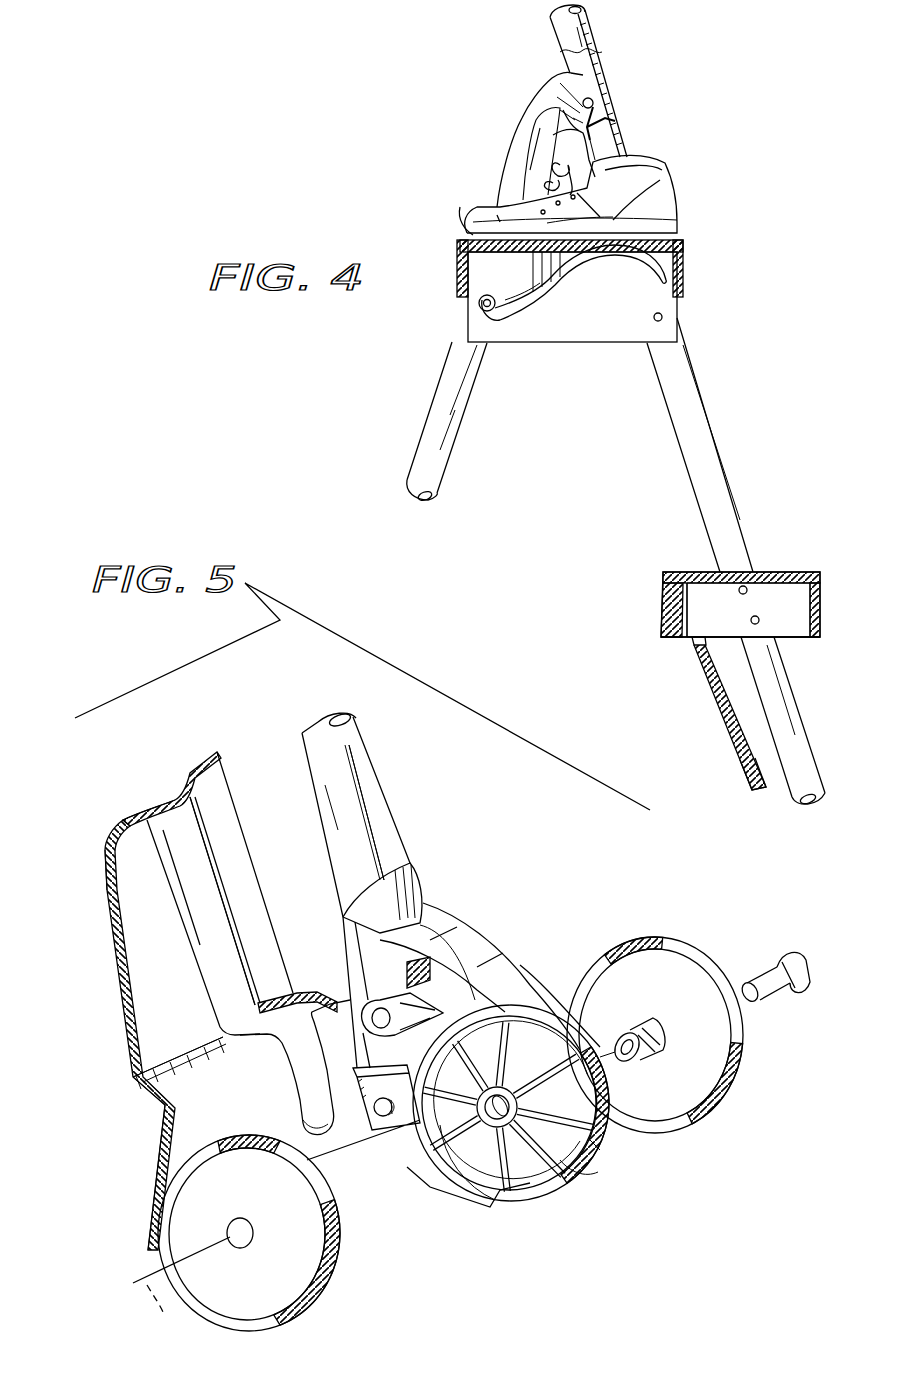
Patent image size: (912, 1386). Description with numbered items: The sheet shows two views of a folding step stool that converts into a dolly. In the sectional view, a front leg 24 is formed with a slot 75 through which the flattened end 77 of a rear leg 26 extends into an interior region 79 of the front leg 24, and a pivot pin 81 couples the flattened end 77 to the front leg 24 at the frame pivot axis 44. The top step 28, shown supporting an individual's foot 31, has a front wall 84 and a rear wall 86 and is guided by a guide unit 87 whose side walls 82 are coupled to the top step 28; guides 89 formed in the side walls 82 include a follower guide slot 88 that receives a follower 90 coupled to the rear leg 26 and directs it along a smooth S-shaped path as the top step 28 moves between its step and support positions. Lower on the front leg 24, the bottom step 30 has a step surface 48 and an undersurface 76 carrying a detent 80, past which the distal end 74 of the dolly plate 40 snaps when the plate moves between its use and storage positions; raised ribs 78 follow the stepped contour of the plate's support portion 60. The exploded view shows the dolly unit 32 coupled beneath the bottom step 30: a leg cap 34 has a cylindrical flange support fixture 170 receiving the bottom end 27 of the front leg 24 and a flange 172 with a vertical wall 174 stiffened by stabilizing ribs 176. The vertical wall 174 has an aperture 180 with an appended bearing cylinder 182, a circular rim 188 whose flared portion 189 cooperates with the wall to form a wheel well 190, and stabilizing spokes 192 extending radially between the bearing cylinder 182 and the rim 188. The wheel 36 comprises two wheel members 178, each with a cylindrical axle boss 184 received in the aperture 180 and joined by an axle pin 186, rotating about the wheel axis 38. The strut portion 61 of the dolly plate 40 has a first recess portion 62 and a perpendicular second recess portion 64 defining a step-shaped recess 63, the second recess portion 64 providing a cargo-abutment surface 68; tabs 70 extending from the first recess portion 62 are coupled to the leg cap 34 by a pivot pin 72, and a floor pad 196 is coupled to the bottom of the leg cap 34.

In FIG. 4, the front legs 24 is at (718, 428).
In FIG. 5, the front legs 24 is at (395, 792).
In FIG. 4, the rear legs 26 is at (413, 430).
In FIG. 5, the bottom end 27 is at (385, 842).
In FIG. 4, the top step 28 is at (693, 241).
In FIG. 4, the bottom step 30 is at (833, 637).
In FIG. 4, the individual's foot 31 is at (633, 187).
In FIG. 5, the dolly unit 32 is at (113, 997).
In FIG. 5, the leg caps 34 is at (463, 897).
In FIG. 5, the wheels 36 is at (677, 940).
In FIG. 5, the wheel axis 38 is at (181, 1290).
In FIG. 4, the dolly plate 40 is at (693, 688).
In FIG. 5, the dolly plate 40 is at (130, 887).
In FIG. 4, the frame pivot axis 44 is at (607, 120).
In FIG. 4, the step surface 48 is at (777, 573).
In FIG. 4, the support portion 60 is at (723, 707).
In FIG. 5, the support portion 60 is at (147, 935).
In FIG. 5, the strut portion 61 is at (223, 1053).
In FIG. 5, the first recess portion 62 is at (193, 1117).
In FIG. 5, the recess 63 is at (140, 1117).
In FIG. 5, the second recess portion 64 is at (165, 1077).
In FIG. 5, the cargo-abutment surface 68 is at (190, 1067).
In FIG. 5, the tabs 70 is at (400, 1125).
In FIG. 5, the pivot pin 72 is at (380, 1117).
In FIG. 4, the distal end 74 is at (697, 644).
In FIG. 4, the slot 75 is at (577, 143).
In FIG. 4, the undersurface 76 is at (800, 640).
In FIG. 4, the flattened end 77 is at (577, 87).
In FIG. 4, the raised ribs 78 is at (737, 748).
In FIG. 5, the raised ribs 78 is at (188, 828).
In FIG. 4, the interior region 79 is at (603, 128).
In FIG. 4, the detent 80 is at (692, 641).
In FIG. 4, the pivot pin 81 is at (593, 103).
In FIG. 4, the side walls 82 is at (563, 333).
In FIG. 4, the front wall 84 is at (683, 270).
In FIG. 4, the rear wall 86 is at (463, 282).
In FIG. 4, the guide units 87 is at (473, 223).
In FIG. 4, the follower guide slots 88 is at (607, 297).
In FIG. 4, the guides 89 is at (513, 293).
In FIG. 4, the followers 90 is at (481, 297).
In FIG. 5, the flange support fixture 170 is at (400, 888).
In FIG. 5, the flange 172 is at (523, 937).
In FIG. 5, the vertical wall 174 is at (360, 967).
In FIG. 5, the stabilizing ribs 176 is at (360, 982).
In FIG. 5, the wheel members 178 is at (337, 1237).
In FIG. 5, the aperture 180 is at (490, 1130).
In FIG. 5, the bearing cylinder 182 is at (525, 1105).
In FIG. 5, the cylindrical axle boss 184 is at (645, 1035).
In FIG. 5, the axle pin 186 is at (770, 975).
In FIG. 5, the circular rim 188 is at (607, 1148).
In FIG. 5, the flared portion 189 is at (477, 1003).
In FIG. 5, the wheel well 190 is at (527, 1168).
In FIG. 5, the stabilizing spokes 192 is at (575, 1170).
In FIG. 5, the floor pads 196 is at (475, 1215).